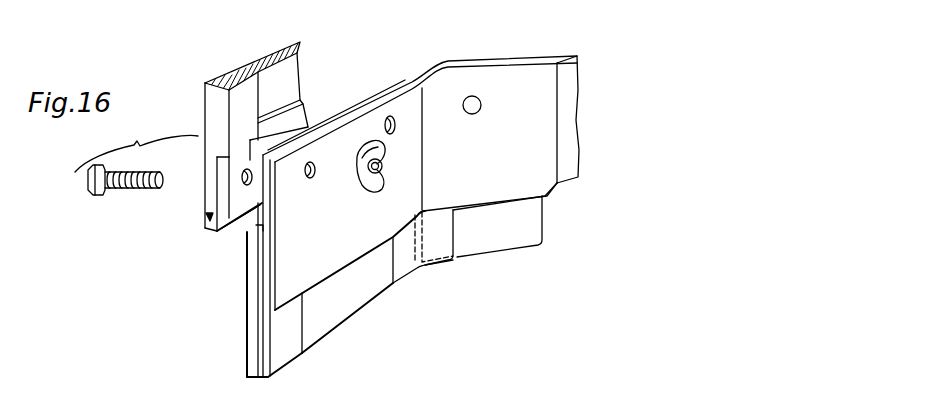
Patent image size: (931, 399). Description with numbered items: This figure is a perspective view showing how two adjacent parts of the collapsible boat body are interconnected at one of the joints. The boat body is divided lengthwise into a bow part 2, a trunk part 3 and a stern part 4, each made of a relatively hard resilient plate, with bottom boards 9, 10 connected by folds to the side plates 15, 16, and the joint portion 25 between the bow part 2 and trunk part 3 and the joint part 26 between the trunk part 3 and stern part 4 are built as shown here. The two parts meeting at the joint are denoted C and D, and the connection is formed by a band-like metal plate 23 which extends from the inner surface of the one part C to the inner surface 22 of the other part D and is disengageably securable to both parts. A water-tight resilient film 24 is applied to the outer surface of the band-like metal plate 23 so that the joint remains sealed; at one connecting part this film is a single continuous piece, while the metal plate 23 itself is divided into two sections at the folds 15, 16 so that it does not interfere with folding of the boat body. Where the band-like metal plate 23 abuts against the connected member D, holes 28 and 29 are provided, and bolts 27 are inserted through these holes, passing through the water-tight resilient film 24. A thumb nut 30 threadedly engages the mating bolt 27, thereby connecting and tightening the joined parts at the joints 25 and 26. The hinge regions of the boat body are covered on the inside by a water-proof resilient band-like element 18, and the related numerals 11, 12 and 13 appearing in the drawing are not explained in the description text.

The bow part 2 is at (224, 132).
The trunk part 3 is at (200, 121).
The stern part 4 is at (241, 326).
The boat bottom board 9 is at (505, 238).
The boat bottom board 10 is at (500, 235).
The insert plate 11 is at (288, 73).
The bottom flange 12 is at (367, 295).
The bottom flange (alternate) 13 is at (362, 280).
The boat side plate / fold 15 is at (453, 272).
The boat side plate / fold 16 is at (418, 280).
The water-proof resilient band-like element 18 is at (441, 250).
The inner surface 22 is at (222, 212).
The band-like metal plate 23 is at (373, 127).
The water-tight resilient film 24 is at (250, 173).
The joint portion 25 is at (181, 267).
The joint part 26 is at (208, 230).
The bolt 27 is at (133, 188).
The hole 28 is at (247, 186).
The hole 29 is at (313, 178).
The thumb nut 30 is at (367, 185).
The one part of the joint parts C is at (338, 307).
The other part / connected member D is at (263, 57).